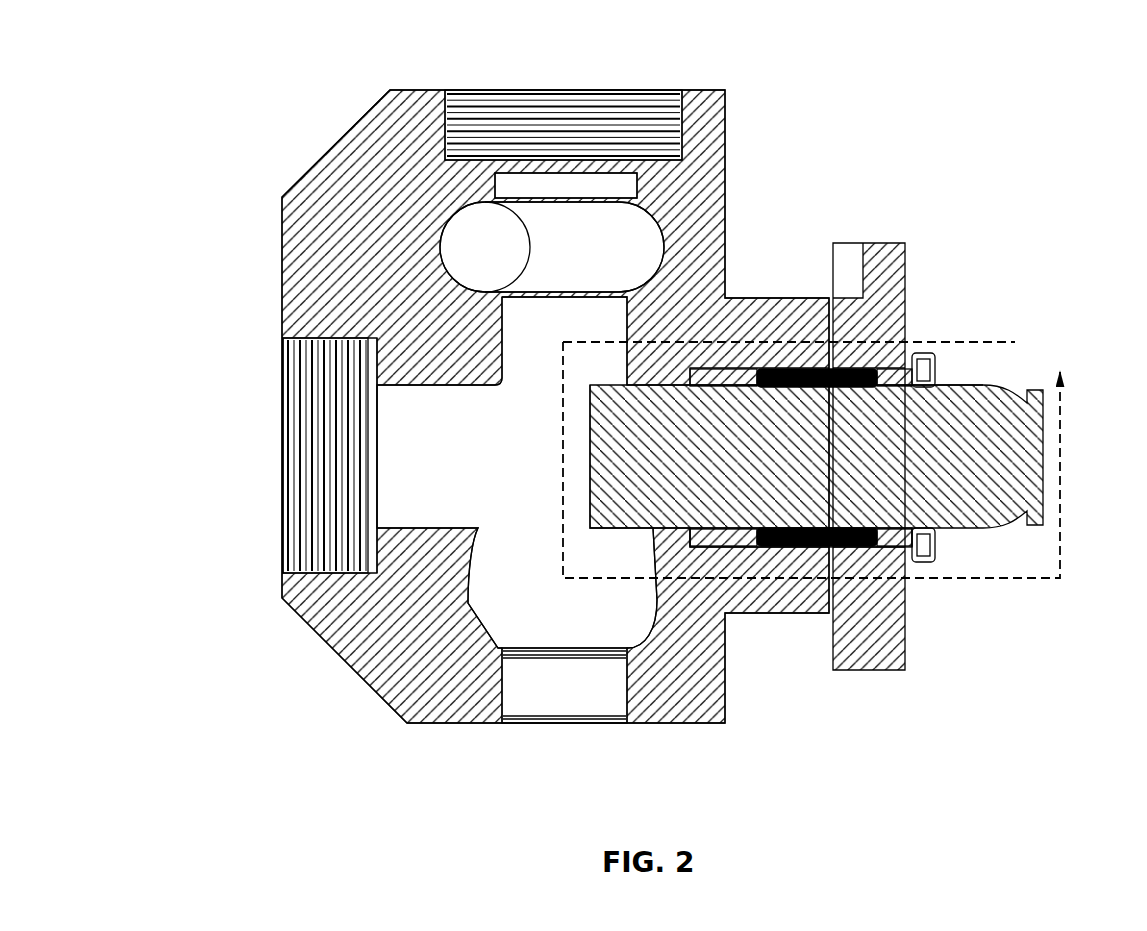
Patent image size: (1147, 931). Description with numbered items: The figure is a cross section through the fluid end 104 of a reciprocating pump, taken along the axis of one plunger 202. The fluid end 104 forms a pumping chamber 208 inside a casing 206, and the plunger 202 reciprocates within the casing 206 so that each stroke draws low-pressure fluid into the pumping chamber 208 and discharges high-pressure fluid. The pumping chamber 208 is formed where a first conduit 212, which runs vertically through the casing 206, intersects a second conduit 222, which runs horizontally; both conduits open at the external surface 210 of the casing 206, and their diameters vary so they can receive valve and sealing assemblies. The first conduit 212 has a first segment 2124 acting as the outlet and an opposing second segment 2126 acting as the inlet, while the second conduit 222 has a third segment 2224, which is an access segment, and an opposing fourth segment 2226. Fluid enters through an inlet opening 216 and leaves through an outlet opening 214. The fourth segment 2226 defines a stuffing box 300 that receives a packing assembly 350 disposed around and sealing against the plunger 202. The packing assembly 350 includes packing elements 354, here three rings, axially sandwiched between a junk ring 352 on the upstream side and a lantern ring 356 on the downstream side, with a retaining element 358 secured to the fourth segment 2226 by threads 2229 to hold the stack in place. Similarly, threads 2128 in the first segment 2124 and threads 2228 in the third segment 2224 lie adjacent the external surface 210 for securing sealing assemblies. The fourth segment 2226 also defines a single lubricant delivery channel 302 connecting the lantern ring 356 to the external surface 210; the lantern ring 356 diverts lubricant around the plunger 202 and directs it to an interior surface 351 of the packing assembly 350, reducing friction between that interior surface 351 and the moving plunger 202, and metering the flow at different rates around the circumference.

The fluid end 104 is at (619, 404).
The plunger 202 is at (859, 456).
The casing 206 is at (287, 287).
The pumping chamber 208 is at (531, 463).
The external surface 210 is at (368, 92).
The first conduit 212 is at (555, 213).
The opening 214 is at (485, 243).
The opening 216 is at (622, 675).
The second conduit 222 is at (400, 472).
The stuffing box 300 is at (807, 368).
The lubricant delivery channel 302 is at (832, 323).
The packing assembly 350 is at (884, 652).
The interior surface 351 is at (850, 391).
The junk ring 352 is at (728, 543).
The packing elements 354 is at (798, 547).
The lantern ring 356 is at (870, 543).
The retaining element 358 is at (910, 550).
The first segment 2124 is at (593, 213).
The second segment 2126 is at (522, 668).
The threads 2128 is at (638, 133).
The third segment 2224 is at (395, 415).
The fourth segment 2226 is at (1087, 356).
The threads 2228 is at (345, 463).
The threads 2229 is at (905, 352).